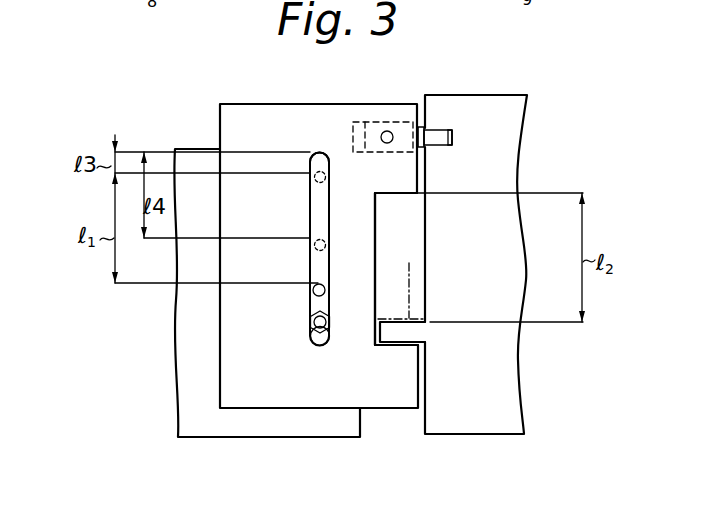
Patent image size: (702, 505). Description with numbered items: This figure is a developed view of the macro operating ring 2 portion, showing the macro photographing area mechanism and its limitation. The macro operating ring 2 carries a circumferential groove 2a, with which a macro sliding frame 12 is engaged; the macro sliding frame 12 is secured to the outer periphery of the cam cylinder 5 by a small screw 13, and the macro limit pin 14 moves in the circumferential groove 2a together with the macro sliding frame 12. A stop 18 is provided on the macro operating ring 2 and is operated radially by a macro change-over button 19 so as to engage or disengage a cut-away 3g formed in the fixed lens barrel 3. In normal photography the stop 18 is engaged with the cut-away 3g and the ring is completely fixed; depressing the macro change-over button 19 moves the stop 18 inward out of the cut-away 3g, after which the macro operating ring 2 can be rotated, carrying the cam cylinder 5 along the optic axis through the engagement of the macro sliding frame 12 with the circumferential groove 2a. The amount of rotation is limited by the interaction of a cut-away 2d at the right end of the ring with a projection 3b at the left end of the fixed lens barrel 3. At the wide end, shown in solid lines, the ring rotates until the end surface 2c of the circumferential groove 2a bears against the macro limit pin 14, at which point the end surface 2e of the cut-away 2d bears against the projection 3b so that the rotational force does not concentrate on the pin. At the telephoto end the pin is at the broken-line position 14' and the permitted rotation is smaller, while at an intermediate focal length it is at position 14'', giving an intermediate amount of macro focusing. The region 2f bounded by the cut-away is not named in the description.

The macro operating ring 2 is at (298, 405).
The circumferential groove 2a is at (323, 205).
The end surface of the circumferential groove 2c is at (320, 153).
The cut-away 2d is at (378, 268).
The end surface of the cut-away 2e is at (407, 194).
The recess 2f is at (380, 348).
The fixed lens barrel 3 is at (497, 425).
The projection 3b is at (404, 334).
The cut-away 3g is at (455, 137).
The cam cylinder 5 is at (225, 431).
The macro sliding frame 12 is at (331, 318).
The small screw 13 is at (310, 326).
The macro limit pin 14 is at (291, 298).
The macro limit pin position at telephoto end 14' is at (292, 185).
The macro limit pin position at intermediate focal length 14'' is at (290, 254).
The stop 18 is at (437, 131).
The macro change-over button 19 is at (388, 130).